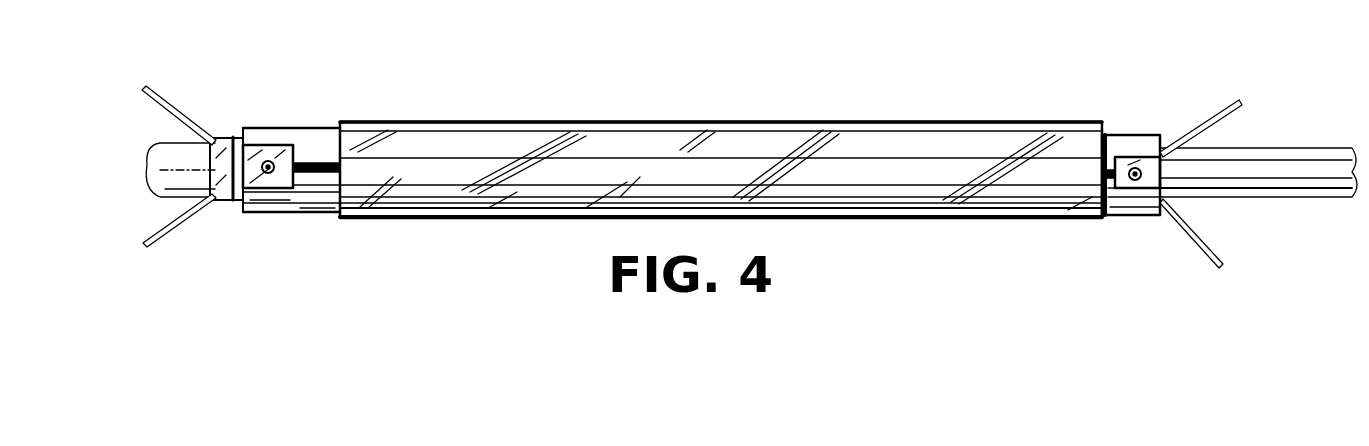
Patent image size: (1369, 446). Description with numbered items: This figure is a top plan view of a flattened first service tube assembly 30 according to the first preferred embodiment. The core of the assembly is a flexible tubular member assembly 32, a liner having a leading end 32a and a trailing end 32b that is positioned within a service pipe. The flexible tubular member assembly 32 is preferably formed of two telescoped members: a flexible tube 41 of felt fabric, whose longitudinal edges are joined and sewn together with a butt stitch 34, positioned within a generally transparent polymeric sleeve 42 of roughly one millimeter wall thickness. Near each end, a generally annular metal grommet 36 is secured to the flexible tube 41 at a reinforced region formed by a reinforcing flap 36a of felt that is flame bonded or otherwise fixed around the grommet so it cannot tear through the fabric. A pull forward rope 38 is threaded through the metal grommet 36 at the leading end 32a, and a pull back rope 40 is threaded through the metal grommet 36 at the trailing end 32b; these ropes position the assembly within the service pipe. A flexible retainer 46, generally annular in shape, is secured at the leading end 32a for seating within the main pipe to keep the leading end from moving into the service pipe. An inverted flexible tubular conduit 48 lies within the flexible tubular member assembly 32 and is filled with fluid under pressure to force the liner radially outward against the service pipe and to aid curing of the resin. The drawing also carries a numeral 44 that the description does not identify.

The first service tube assembly 30 is at (626, 110).
The flexible tubular member assembly 32 is at (433, 228).
The leading end 32a is at (245, 200).
The trailing end 32b is at (1142, 215).
The butt stitch 34 is at (307, 158).
The metal grommet 36 is at (268, 160).
The reinforcing flap 36a is at (278, 155).
The pull forward rope 38 is at (160, 224).
The pull back rope 40 is at (1193, 233).
The flexible tube 41 is at (324, 222).
The transparent sleeve 42 is at (415, 133).
The end cap 44 is at (272, 207).
The flexible retainer 46 is at (213, 140).
The inverted flexible tubular conduit 48 is at (178, 168).